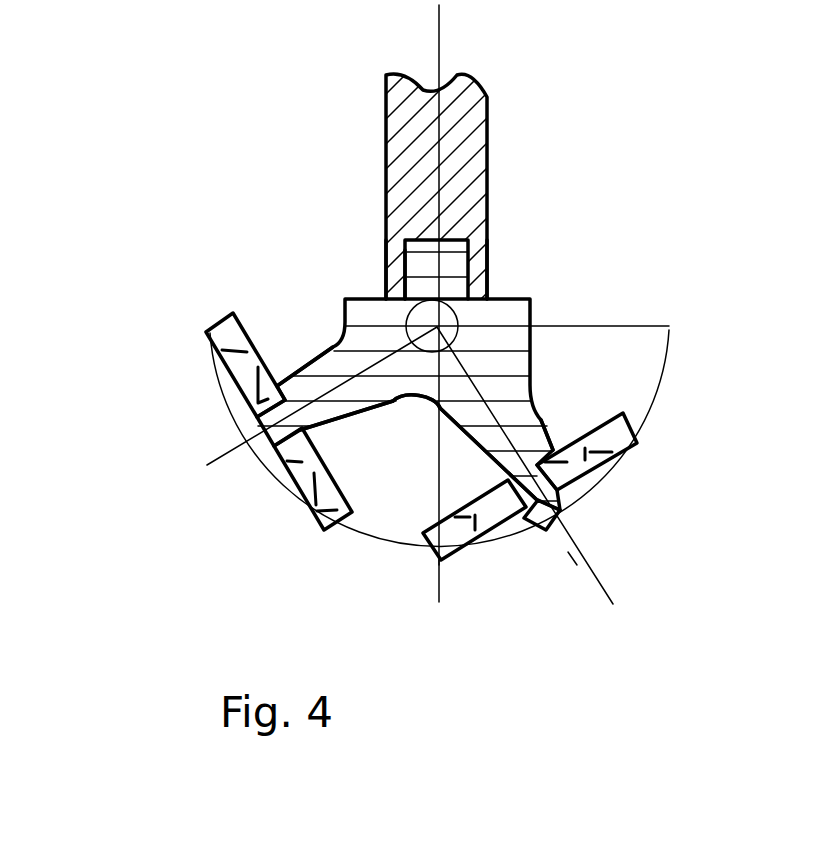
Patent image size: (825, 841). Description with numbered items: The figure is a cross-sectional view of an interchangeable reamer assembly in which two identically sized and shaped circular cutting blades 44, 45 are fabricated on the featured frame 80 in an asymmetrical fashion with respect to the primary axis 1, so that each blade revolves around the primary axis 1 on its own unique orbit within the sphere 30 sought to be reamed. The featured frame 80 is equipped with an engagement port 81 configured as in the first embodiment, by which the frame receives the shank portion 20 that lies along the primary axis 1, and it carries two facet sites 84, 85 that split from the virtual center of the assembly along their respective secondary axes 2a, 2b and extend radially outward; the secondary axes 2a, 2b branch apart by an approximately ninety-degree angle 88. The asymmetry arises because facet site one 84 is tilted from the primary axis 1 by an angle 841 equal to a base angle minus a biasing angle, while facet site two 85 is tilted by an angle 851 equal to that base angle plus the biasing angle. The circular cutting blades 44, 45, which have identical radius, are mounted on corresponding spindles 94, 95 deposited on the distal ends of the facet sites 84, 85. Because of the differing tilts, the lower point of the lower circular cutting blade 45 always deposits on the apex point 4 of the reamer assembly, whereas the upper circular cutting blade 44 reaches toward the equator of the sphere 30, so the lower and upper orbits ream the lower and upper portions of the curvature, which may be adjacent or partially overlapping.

The primary axis 1 is at (439, 60).
The spindle shaft 20 is at (488, 132).
The engagement port 81 is at (488, 230).
The tilt angle α² of facet site two 851 is at (490, 292).
The tilt angle α¹ of facet site one 841 is at (390, 286).
The featured frame 80 is at (532, 298).
The facet site one 84 is at (328, 370).
The facet site two 85 is at (515, 412).
The approximately 90-degree angle 88 is at (437, 328).
The sphere sought to be reamed 30 is at (660, 402).
The circular cutting blade 44 is at (232, 333).
The spindle 94 is at (250, 425).
The circular cutting blade 45 is at (617, 460).
The spindle 95 is at (577, 517).
The secondary axis 2a is at (222, 455).
The secondary axis 2b is at (665, 604).
The apex point 4 is at (439, 565).